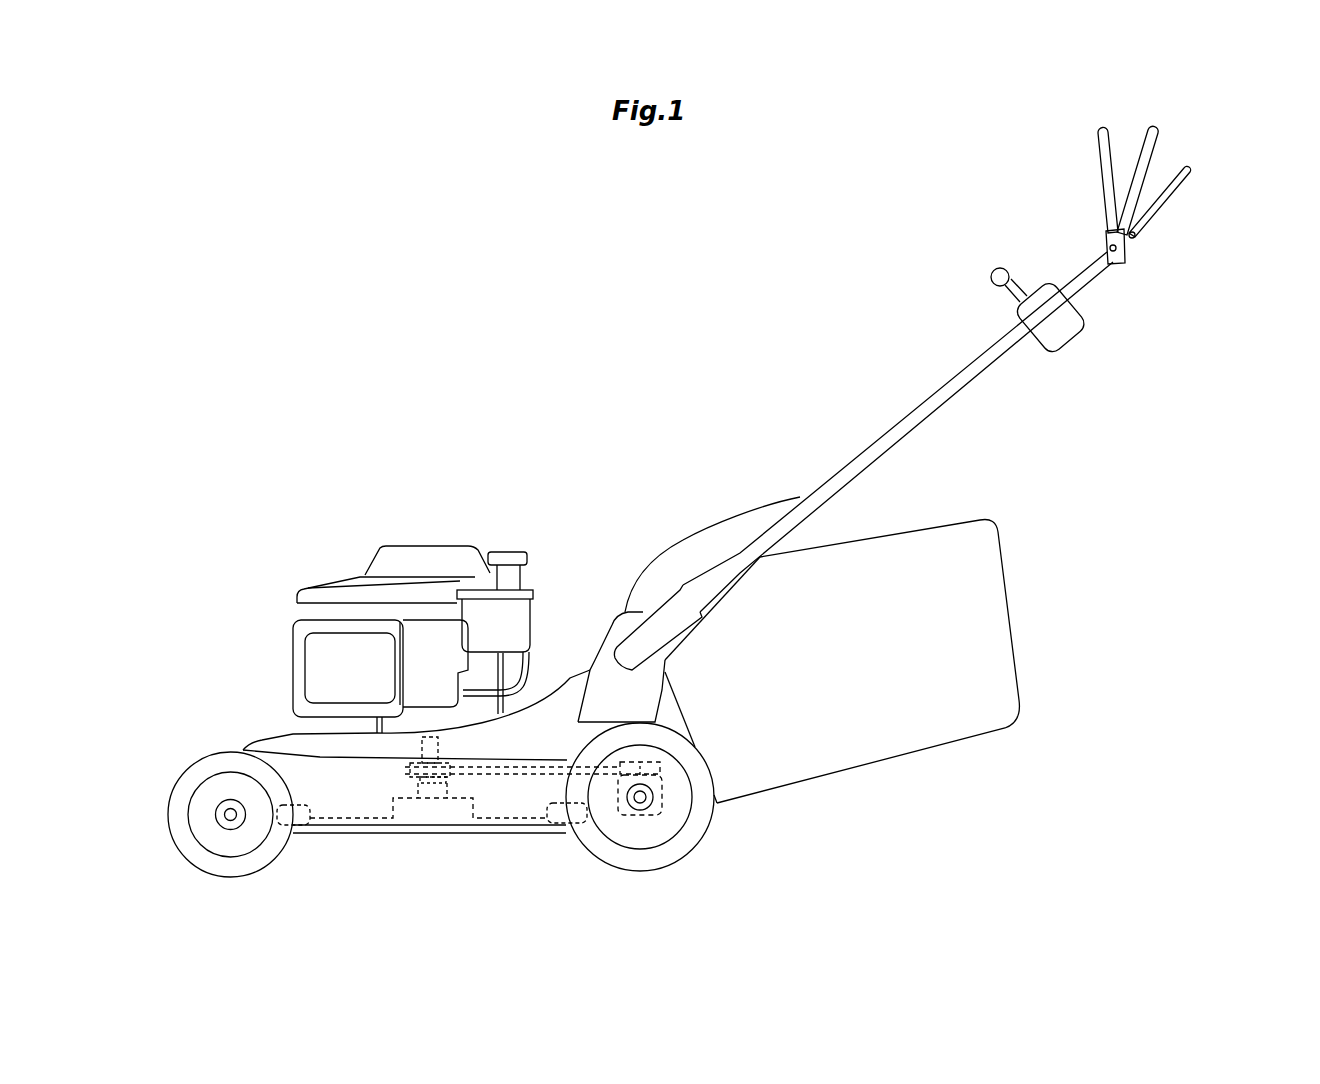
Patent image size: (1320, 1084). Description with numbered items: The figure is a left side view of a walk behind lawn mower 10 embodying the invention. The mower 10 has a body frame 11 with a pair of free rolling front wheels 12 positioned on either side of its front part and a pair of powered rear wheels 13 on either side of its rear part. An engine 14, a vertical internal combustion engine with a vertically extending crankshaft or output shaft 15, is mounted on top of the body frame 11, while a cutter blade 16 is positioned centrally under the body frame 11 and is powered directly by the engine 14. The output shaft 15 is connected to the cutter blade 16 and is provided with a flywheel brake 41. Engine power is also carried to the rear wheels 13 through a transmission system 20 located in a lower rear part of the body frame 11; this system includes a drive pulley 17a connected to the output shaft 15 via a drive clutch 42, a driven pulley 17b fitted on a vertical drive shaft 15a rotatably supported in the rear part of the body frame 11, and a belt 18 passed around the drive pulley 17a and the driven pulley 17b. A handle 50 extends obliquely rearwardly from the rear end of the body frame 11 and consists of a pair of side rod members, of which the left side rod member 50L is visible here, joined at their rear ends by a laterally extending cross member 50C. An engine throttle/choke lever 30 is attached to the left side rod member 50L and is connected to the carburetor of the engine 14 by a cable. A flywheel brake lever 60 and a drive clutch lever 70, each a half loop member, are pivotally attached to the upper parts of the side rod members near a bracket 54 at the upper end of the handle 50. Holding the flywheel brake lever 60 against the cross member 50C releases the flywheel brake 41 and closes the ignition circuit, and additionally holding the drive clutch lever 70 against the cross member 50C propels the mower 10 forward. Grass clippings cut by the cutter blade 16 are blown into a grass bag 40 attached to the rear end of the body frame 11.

The walk behind lawn mower 10 is at (302, 408).
The body frame 11 is at (260, 747).
The front wheels 12 is at (232, 868).
The rear wheels 13 is at (643, 870).
The engine 14 is at (425, 643).
The output shaft 15 is at (438, 740).
The vertical drive shaft 15a is at (640, 775).
The cutter blade 16 is at (306, 828).
The drive pulley 17a is at (415, 778).
The driven pulley 17b is at (660, 773).
The belt 18 is at (543, 766).
The transmission system 20 is at (630, 817).
The engine throttle/choke lever 30 is at (996, 270).
The grass bag 40 is at (1003, 613).
The flywheel brake 41 is at (448, 789).
The drive clutch 42 is at (418, 760).
The handle 50 is at (863, 461).
The left side rod member 50L is at (915, 412).
The cross member 50C is at (1158, 140).
The bracket 54 is at (1130, 262).
The flywheel brake lever 60 is at (1190, 180).
The drive clutch lever 70 is at (1110, 138).